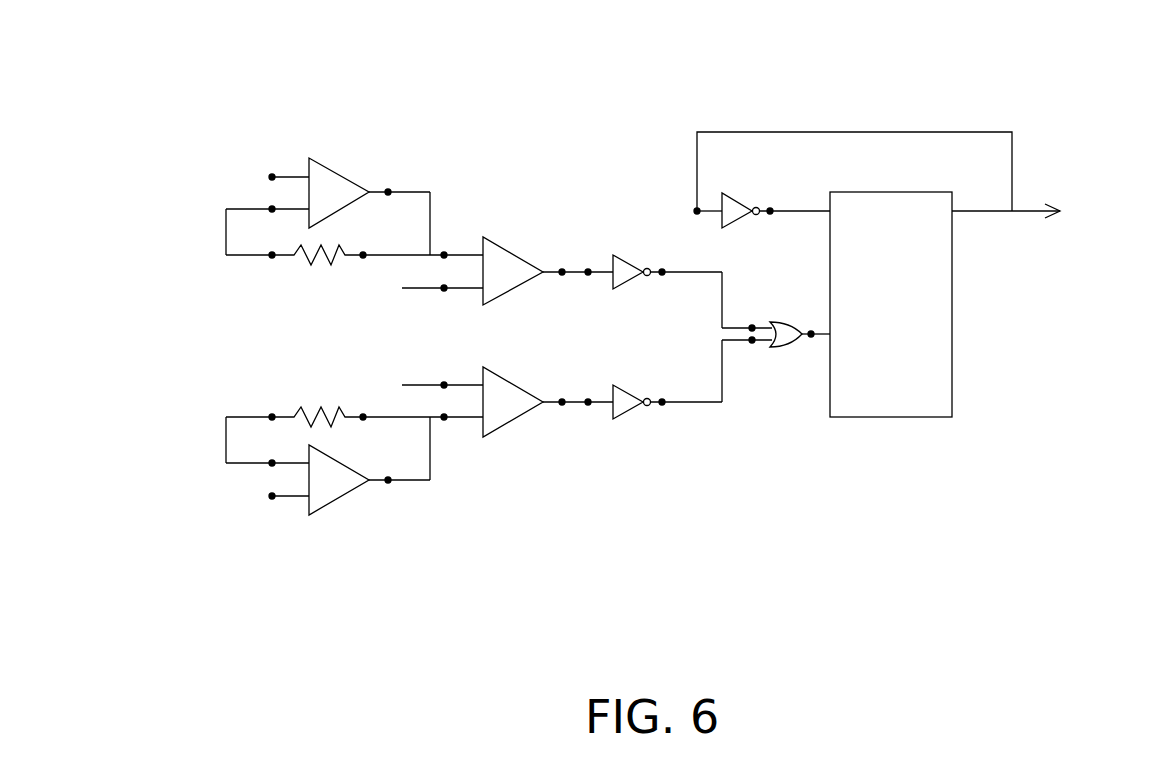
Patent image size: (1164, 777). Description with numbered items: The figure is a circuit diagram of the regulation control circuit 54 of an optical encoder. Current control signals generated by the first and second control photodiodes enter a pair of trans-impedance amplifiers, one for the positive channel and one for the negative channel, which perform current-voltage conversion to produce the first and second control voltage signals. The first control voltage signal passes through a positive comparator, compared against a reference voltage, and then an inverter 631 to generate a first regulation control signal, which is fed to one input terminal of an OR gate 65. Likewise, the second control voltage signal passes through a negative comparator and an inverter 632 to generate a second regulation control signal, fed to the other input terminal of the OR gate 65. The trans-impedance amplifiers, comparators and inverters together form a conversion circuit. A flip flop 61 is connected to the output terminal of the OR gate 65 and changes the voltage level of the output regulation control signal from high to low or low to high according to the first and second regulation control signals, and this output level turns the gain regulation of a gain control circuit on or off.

The regulation control circuit 54 is at (212, 33).
The inverter 631 is at (623, 255).
The inverter 632 is at (625, 405).
The OR gate 65 is at (787, 341).
The flip flop 61 is at (887, 395).